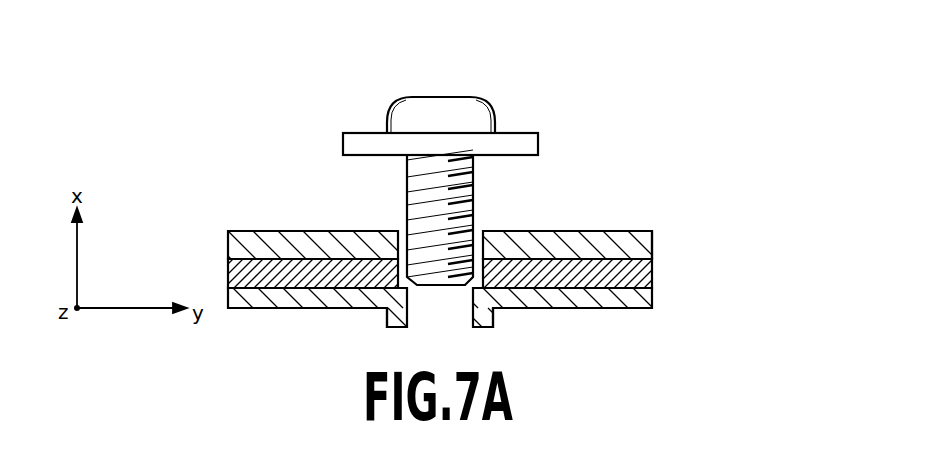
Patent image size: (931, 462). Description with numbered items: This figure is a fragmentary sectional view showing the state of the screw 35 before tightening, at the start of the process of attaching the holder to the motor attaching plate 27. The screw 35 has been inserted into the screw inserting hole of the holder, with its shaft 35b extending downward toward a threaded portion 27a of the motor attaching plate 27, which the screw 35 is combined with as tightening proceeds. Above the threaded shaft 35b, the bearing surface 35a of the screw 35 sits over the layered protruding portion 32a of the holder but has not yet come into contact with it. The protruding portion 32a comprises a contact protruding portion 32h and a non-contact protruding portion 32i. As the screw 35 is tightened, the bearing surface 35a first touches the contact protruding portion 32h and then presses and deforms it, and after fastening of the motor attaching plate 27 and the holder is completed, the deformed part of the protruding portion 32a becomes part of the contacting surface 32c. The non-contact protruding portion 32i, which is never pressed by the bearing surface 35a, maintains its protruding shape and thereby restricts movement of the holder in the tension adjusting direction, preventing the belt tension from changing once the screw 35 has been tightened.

The screw 35 is at (440, 108).
The bearing surface 35a is at (358, 153).
The threaded shaft of screw 35b is at (415, 186).
The protruding portion 32a is at (518, 207).
The contact protruding portion 32h is at (518, 231).
The non-contact protruding portion 32i is at (598, 231).
The contacting surface 32c is at (652, 238).
The motor attaching plate 27 is at (630, 303).
The threaded portion 27a is at (472, 315).